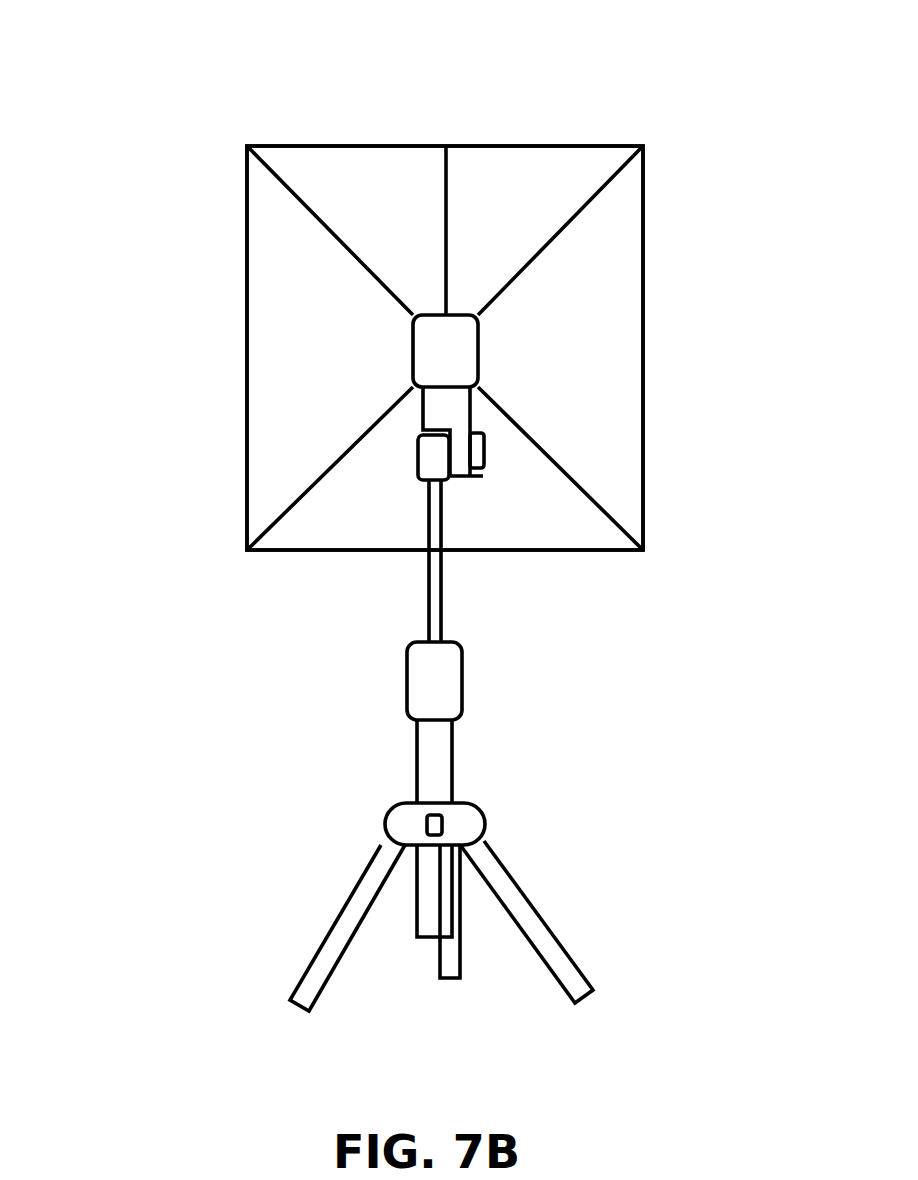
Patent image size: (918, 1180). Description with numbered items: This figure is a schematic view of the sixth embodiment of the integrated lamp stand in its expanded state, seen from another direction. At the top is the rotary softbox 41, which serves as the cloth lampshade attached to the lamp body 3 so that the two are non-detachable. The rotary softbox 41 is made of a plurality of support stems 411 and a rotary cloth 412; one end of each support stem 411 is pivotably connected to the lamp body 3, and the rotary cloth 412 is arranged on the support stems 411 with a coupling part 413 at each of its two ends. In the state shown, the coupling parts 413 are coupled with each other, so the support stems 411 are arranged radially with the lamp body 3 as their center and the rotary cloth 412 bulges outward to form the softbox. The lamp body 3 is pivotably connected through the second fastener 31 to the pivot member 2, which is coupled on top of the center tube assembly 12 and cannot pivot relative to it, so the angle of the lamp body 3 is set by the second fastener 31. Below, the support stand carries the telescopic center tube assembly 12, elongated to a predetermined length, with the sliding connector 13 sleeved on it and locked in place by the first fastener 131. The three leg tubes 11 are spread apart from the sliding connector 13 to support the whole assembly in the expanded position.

The rotary softbox 41 is at (197, 80).
The support stems 411 is at (329, 228).
The rotary cloth 412 is at (298, 352).
The coupling part 413 is at (449, 205).
The lamp body 3 is at (478, 352).
The second fastener 31 is at (484, 468).
The pivot member 2 is at (418, 475).
The center tube assembly 12 is at (452, 743).
The sliding connector 13 is at (385, 825).
The first fastener 131 is at (442, 825).
The leg tubes 11 is at (554, 937).